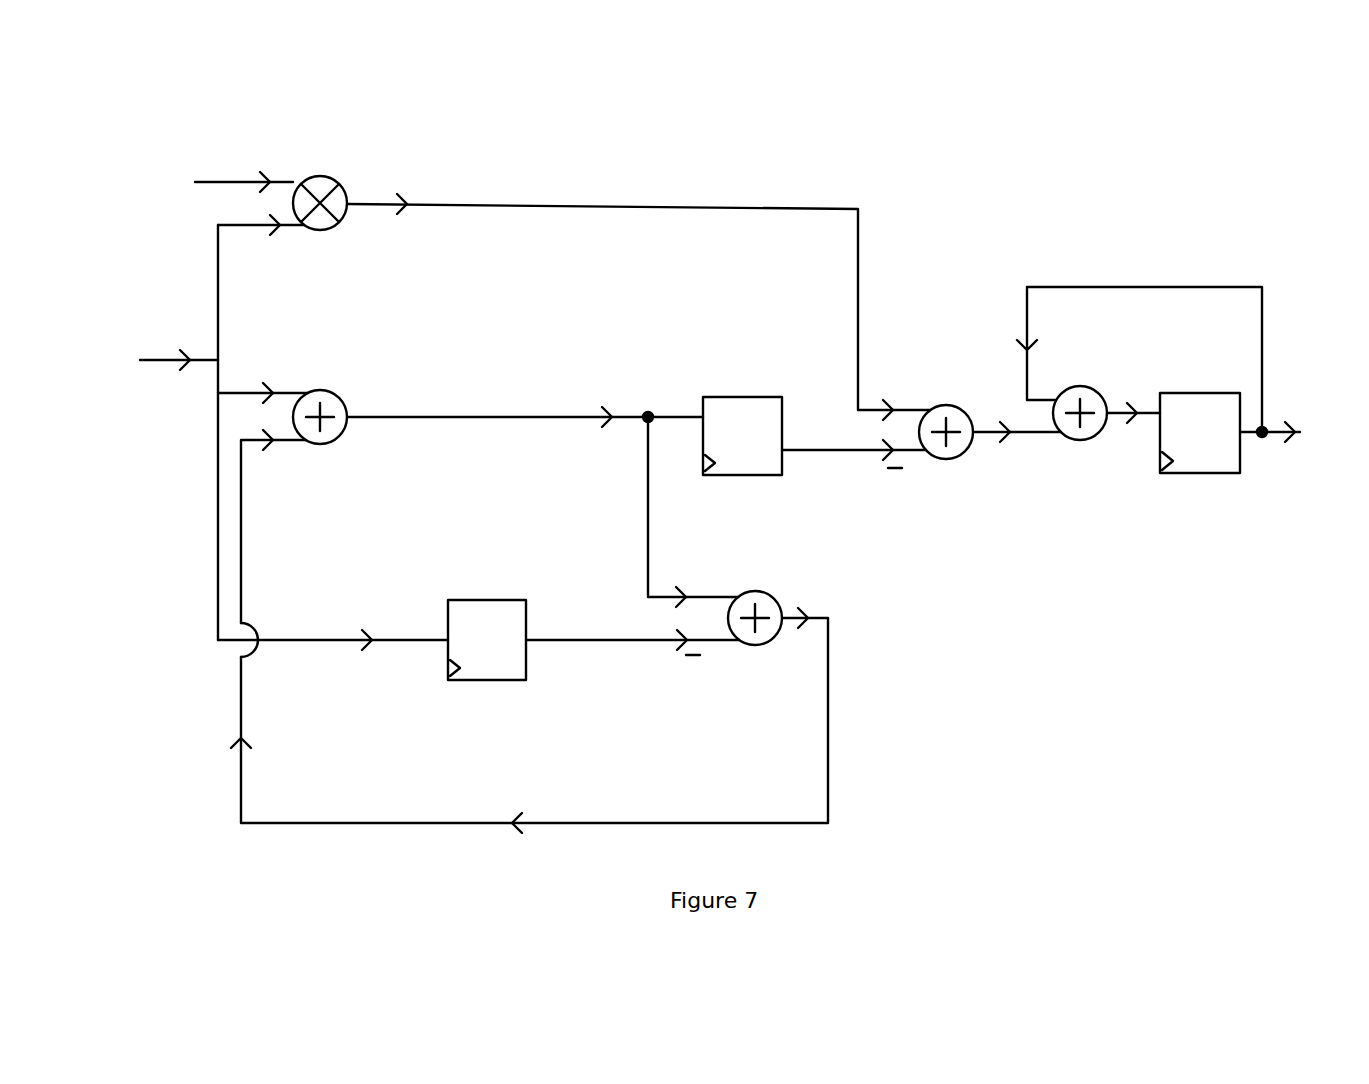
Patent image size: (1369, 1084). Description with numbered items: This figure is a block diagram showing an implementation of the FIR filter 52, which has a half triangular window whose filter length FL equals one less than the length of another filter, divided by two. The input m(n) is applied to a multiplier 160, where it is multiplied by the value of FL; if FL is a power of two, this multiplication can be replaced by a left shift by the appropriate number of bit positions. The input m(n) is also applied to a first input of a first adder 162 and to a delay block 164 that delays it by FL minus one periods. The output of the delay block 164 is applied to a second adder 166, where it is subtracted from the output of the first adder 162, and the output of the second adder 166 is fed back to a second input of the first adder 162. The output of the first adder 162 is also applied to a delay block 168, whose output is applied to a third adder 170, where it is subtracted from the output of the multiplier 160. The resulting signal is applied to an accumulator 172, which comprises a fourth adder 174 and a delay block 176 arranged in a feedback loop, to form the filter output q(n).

The FIR filter 52 is at (1071, 121).
The multiplier 160 is at (343, 222).
The first adder 162 is at (318, 391).
The (FL−1) period delay block 164 is at (487, 600).
The second adder 166 is at (752, 591).
The delay block 168 is at (742, 397).
The third adder 170 is at (940, 407).
The accumulator 172 is at (1160, 268).
The fourth adder 174 is at (1080, 440).
The delay block 176 is at (1200, 473).